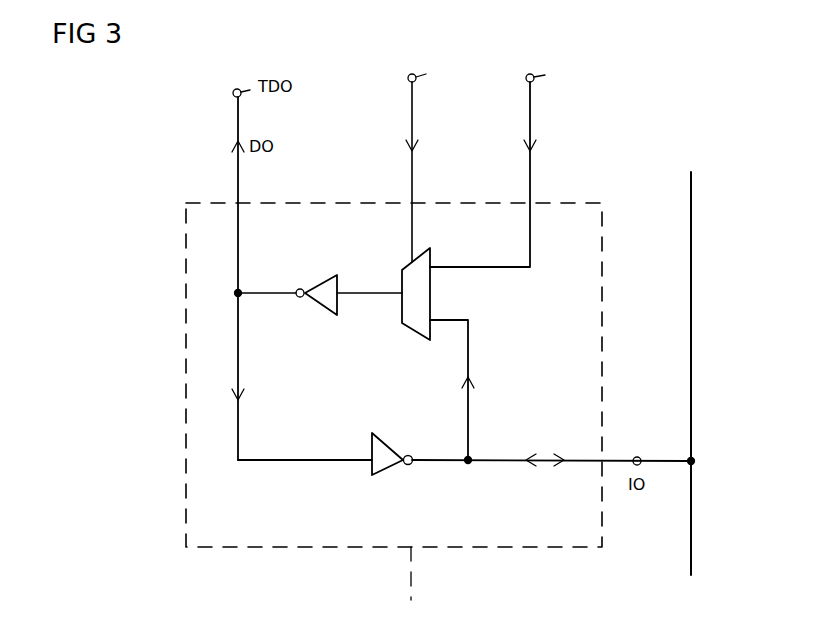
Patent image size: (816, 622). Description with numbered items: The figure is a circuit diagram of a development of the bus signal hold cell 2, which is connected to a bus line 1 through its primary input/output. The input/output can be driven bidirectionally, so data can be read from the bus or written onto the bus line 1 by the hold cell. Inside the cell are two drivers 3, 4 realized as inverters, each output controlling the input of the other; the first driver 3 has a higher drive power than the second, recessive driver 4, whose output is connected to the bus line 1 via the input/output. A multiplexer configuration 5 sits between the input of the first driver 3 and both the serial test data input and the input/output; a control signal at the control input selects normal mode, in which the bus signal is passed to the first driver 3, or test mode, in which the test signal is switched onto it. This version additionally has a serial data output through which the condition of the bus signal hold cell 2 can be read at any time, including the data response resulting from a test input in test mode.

The bus line 1 is at (695, 277).
The bus signal hold cell 2 is at (562, 547).
The first driver 3 is at (311, 286).
The second driver 4 is at (375, 472).
The multiplexer configuration 5 is at (398, 272).